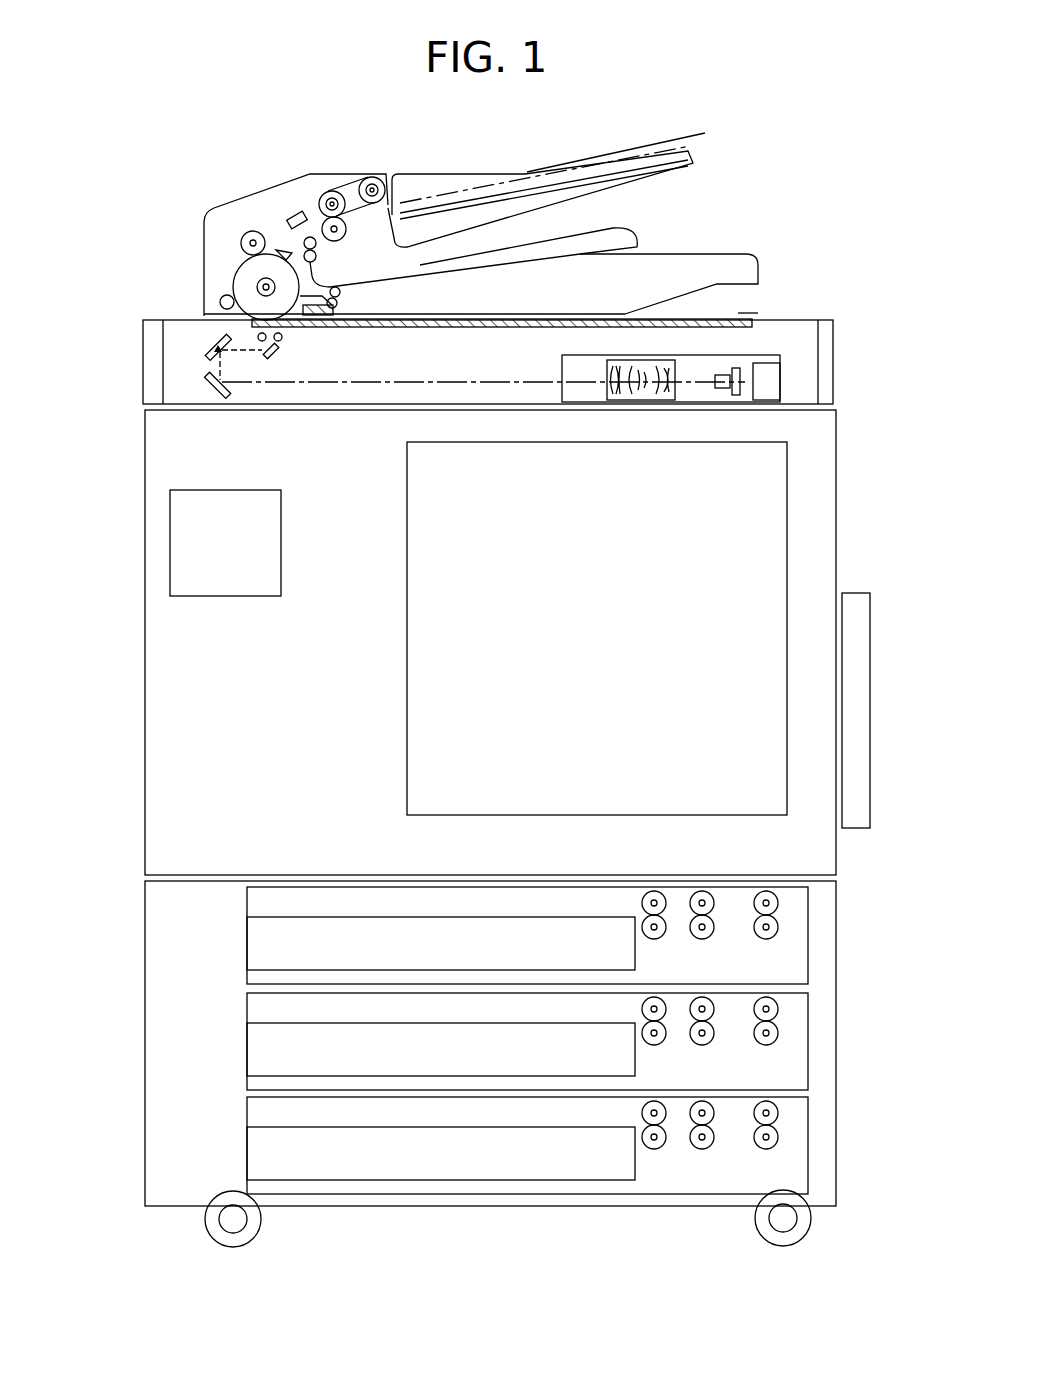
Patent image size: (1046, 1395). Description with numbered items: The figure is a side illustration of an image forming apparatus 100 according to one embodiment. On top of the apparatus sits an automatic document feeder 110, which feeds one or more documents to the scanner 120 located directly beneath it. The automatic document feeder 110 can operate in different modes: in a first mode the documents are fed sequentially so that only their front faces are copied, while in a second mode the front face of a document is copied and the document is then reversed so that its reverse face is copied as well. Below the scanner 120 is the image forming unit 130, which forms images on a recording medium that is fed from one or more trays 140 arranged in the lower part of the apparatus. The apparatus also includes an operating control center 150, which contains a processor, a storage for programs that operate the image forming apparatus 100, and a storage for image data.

The image forming apparatus 100 is at (157, 213).
The automatic document feeder 110 is at (275, 207).
The scanner 120 is at (143, 360).
The image forming unit 130 is at (757, 524).
The trays 140 is at (838, 1031).
The operating control center 150 is at (170, 513).